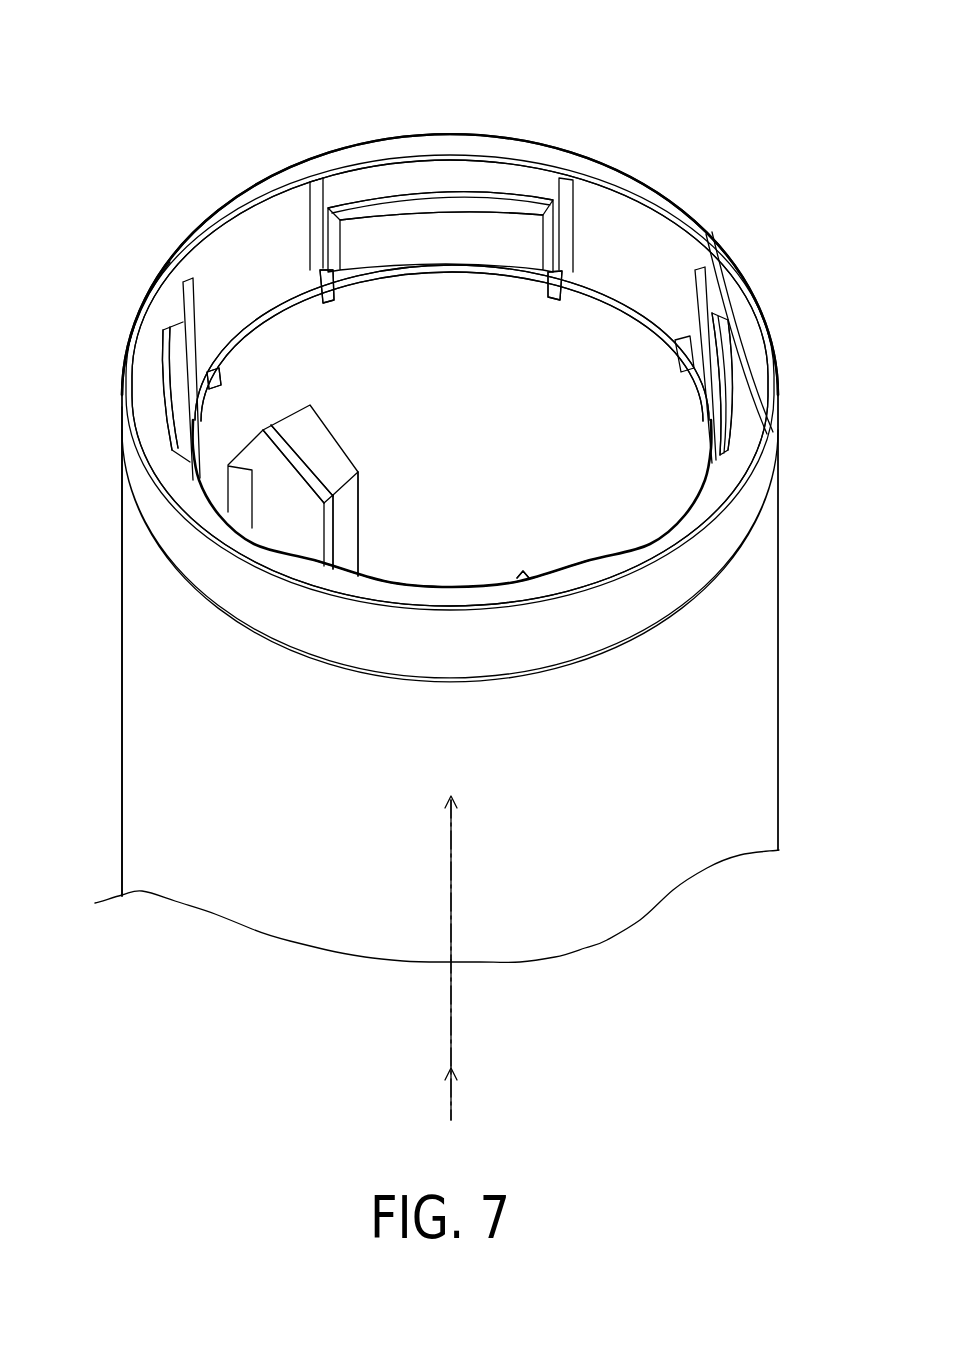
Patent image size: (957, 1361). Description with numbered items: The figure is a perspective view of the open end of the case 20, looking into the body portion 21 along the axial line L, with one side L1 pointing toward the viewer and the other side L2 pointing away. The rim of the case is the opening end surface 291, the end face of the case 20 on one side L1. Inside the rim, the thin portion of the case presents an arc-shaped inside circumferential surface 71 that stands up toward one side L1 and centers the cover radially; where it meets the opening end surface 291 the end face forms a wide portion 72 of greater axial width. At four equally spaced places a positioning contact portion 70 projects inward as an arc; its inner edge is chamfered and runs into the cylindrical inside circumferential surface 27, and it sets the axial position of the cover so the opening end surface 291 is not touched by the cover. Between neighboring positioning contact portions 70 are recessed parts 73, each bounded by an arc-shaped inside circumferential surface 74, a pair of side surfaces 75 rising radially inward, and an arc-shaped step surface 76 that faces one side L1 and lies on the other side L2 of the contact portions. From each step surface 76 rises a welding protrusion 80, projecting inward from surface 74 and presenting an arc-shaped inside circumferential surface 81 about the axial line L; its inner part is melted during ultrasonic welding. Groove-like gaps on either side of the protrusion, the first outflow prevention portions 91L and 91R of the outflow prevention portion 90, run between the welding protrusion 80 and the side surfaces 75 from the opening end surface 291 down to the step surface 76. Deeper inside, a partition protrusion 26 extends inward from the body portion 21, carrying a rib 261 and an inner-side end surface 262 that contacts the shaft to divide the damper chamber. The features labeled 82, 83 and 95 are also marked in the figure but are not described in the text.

The body portion 21 is at (136, 103).
The case 20 is at (91, 448).
The positioning contact portion 70 is at (260, 297).
The arc-shaped inside circumferential surface 71 is at (267, 232).
The wide portion 72 is at (294, 177).
The recessed part 73 is at (578, 650).
The arc-shaped inside circumferential surface 74 is at (513, 175).
The side surfaces 75 is at (321, 205).
The arc-shaped step surface 76 is at (467, 268).
The groove portion 95 is at (452, 346).
The welding protrusion 80 is at (412, 266).
The arc-shaped inside circumferential surface 81 is at (464, 253).
The upper edge of locking plate 82 is at (463, 207).
The back edge of locking plate 83 is at (427, 187).
The outflow prevention portion 90 is at (264, 379).
The first outflow prevention portion 91R is at (222, 378).
The first outflow prevention portion 91L is at (333, 292).
The opening end surface 291 is at (137, 313).
The partition protrusion 26 is at (365, 500).
The rib 261 is at (317, 462).
The inner-side end surface 262 is at (350, 512).
The cylindrical inside circumferential surface 27 is at (521, 508).
The axial line L is at (453, 902).
The one side L1 is at (450, 863).
The other side L2 is at (450, 1040).